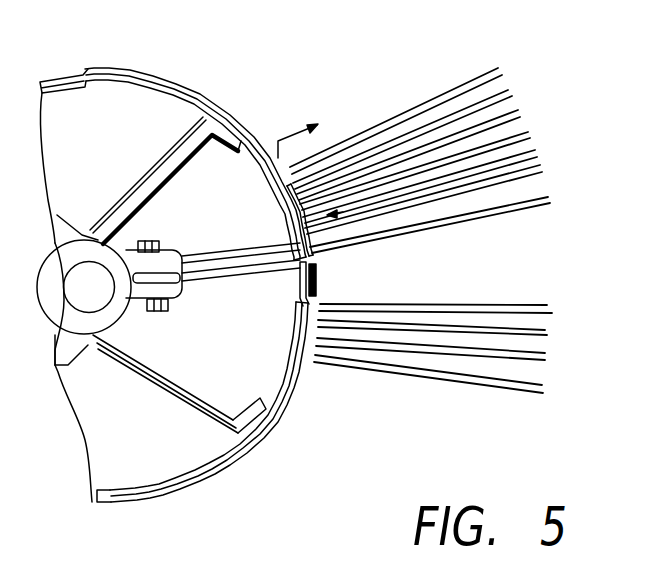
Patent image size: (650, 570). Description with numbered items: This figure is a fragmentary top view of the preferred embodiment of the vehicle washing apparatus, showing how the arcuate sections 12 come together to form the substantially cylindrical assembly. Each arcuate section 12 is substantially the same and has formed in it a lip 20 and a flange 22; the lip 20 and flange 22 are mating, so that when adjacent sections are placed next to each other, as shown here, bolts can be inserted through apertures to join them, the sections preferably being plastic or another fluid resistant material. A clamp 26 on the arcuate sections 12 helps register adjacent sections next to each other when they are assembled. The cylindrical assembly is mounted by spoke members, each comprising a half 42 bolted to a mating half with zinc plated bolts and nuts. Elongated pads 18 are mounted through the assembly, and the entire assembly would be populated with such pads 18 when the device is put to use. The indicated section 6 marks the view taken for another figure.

The arcuate section 12 is at (247, 125).
The clamp 26 is at (65, 78).
The half of spoke member 42 is at (153, 177).
The flange 22 is at (300, 288).
The lip 20 is at (317, 277).
The elongated pad 18 is at (423, 103).
The section line 6 is at (320, 159).